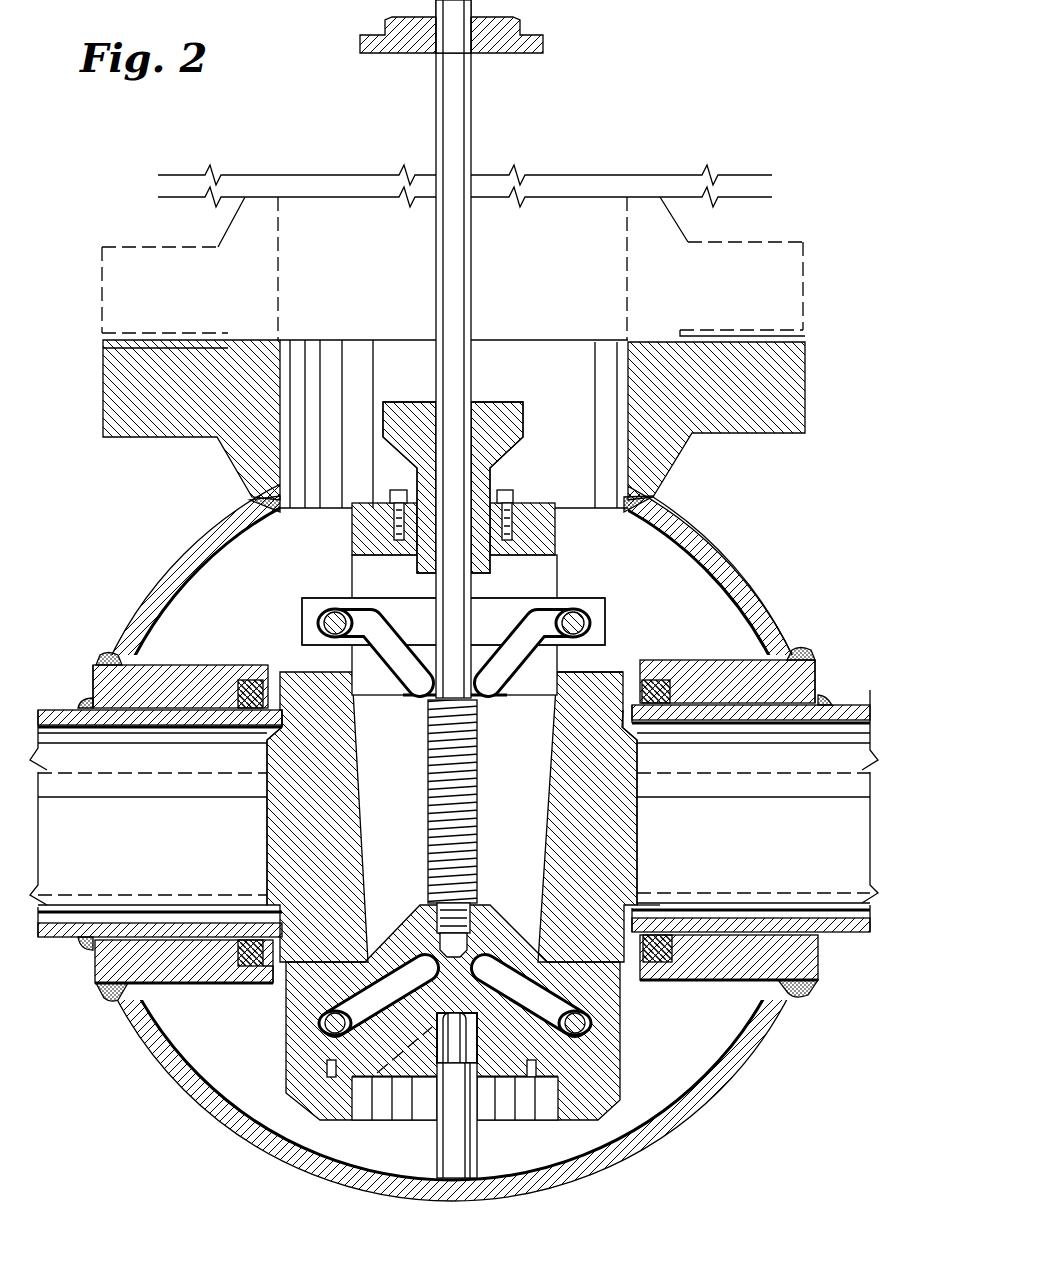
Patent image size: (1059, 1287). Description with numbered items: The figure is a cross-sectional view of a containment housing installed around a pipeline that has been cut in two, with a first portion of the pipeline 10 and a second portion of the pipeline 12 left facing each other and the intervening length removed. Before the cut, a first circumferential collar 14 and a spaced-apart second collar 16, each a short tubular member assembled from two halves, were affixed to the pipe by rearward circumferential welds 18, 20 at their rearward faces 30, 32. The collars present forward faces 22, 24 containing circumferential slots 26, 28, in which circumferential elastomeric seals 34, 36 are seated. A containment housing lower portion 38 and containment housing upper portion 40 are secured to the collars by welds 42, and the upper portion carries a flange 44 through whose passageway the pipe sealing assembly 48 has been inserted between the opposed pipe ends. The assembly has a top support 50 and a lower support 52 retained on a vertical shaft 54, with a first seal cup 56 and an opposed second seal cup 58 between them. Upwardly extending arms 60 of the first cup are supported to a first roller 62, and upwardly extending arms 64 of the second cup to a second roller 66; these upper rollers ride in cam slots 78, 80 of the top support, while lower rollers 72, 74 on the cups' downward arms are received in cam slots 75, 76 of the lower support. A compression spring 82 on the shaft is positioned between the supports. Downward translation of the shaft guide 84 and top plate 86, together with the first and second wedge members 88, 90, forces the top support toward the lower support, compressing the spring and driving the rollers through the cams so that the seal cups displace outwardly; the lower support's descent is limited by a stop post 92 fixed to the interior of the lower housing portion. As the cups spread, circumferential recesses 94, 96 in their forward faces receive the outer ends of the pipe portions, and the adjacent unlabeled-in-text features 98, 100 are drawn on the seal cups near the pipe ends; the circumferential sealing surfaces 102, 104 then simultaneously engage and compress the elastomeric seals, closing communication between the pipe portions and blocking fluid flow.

The first portion of the pipeline 10 is at (58, 937).
The second portion of the pipeline 12 is at (850, 705).
The first circumferential collar 14 is at (178, 668).
The second collar 16 is at (720, 965).
The rearward circumferential weld 18 is at (82, 700).
The rearward circumferential weld 20 is at (827, 943).
The forward face of collar 14 22 is at (278, 970).
The forward face of collar 16 24 is at (640, 975).
The circumferential slot 26 is at (250, 940).
The circumferential slot 28 is at (628, 680).
The rearward face of collar 14 30 is at (93, 683).
The rearward face of collar 16 32 is at (823, 673).
The circumferential elastomeric seal 34 is at (230, 957).
The circumferential elastomeric seal 36 is at (657, 920).
The containment housing lower portion 38 is at (690, 1117).
The containment housing upper portion 40 is at (722, 562).
The welds 42 is at (110, 652).
The flange 44 is at (137, 412).
The pipe sealing assembly 48 is at (620, 609).
The top support 50 is at (497, 612).
The lower support 52 is at (302, 1058).
The vertical shaft 54 is at (455, 126).
The first seal cup 56 is at (290, 818).
The second seal cup 58 is at (620, 828).
The upwardly extending arms 60 is at (343, 660).
The first roller 62 is at (333, 622).
The upwardly extending arms 64 is at (570, 660).
The second roller 66 is at (586, 607).
The lower roller 72 is at (318, 1023).
The lower roller 74 is at (587, 1025).
The cam slot 75 is at (381, 1080).
The cam slot 76 is at (530, 1025).
The cam slot 78 is at (387, 652).
The cam slot 80 is at (508, 652).
The compression spring 82 is at (430, 826).
The shaft guide 84 is at (525, 412).
The top plate 86 is at (535, 515).
The first wedge member 88 is at (406, 790).
The second wedge member 90 is at (523, 785).
The stop post 92 is at (458, 1127).
The circumferential recess 94 is at (268, 735).
The circumferential recess 96 is at (640, 732).
The pipe shoulder 98 is at (283, 725).
The seat shoulder 100 is at (623, 717).
The circumferential sealing surface 102 is at (245, 680).
The circumferential sealing surface 104 is at (652, 700).